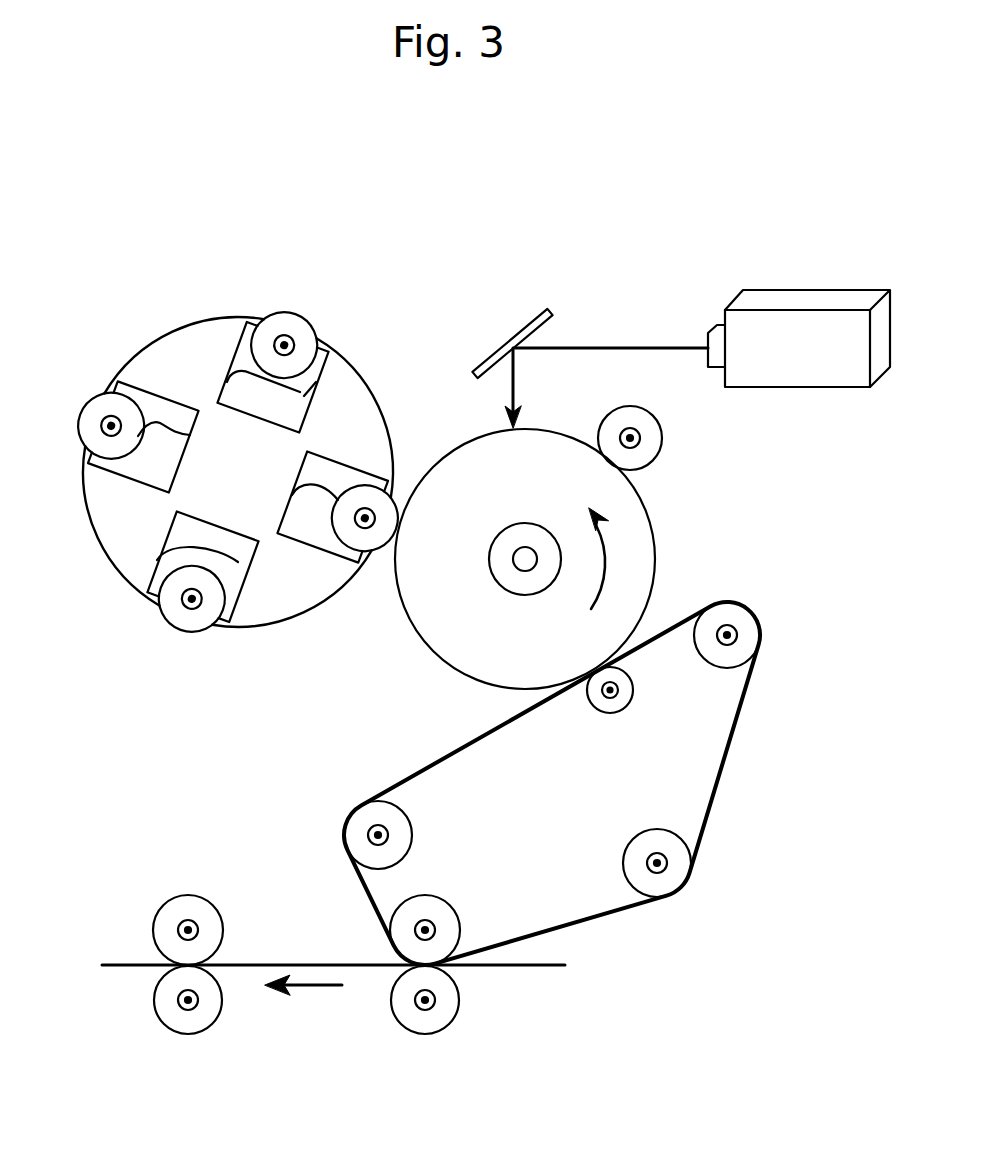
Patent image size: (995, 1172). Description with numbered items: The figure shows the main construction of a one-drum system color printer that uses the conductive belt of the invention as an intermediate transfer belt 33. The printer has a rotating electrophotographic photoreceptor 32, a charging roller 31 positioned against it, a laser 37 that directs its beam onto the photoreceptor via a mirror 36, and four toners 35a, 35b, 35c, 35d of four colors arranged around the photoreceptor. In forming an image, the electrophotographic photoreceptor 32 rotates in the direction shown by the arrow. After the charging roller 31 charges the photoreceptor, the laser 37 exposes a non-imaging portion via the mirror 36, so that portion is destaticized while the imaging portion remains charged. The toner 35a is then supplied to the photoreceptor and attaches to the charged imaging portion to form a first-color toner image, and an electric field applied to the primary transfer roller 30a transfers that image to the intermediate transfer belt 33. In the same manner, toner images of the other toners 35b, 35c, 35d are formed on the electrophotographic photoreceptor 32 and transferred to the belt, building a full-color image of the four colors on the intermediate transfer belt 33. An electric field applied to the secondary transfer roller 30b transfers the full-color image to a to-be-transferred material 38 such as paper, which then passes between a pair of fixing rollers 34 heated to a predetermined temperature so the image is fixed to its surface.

The primary transfer roller 30a is at (622, 688).
The secondary transfer roller 30b is at (440, 1015).
The charging roller 31 is at (648, 443).
The electrophotographic photoreceptor 32 is at (625, 578).
The intermediate transfer belt 33 is at (728, 770).
The fixing roller 34 is at (173, 1012).
The toner 35a is at (150, 467).
The toner 35b is at (158, 559).
The toner 35c is at (305, 527).
The toner 35d is at (303, 393).
The mirror 36 is at (528, 314).
The laser 37 is at (629, 347).
The to-be-transferred material 38 is at (552, 971).